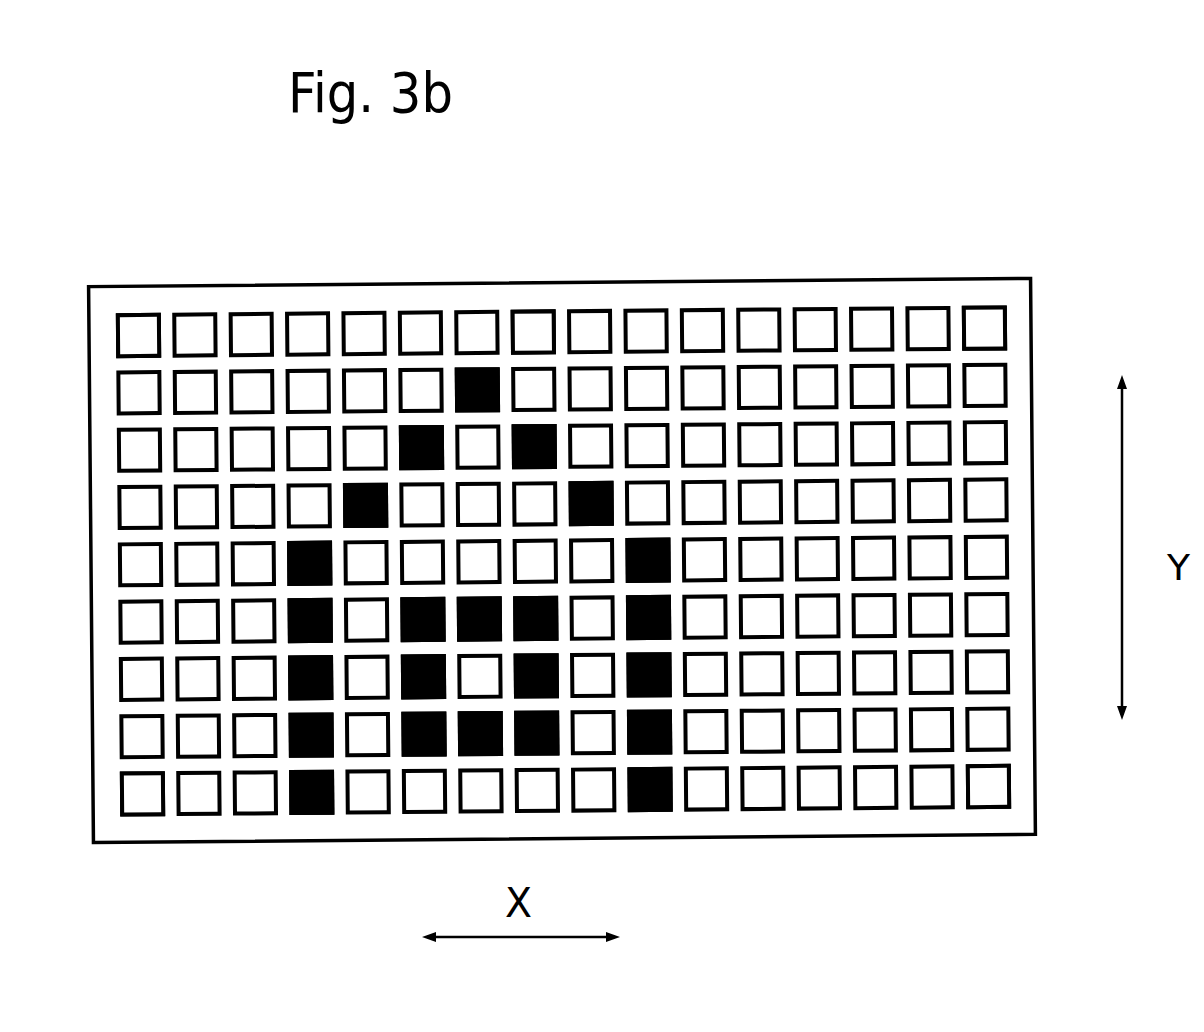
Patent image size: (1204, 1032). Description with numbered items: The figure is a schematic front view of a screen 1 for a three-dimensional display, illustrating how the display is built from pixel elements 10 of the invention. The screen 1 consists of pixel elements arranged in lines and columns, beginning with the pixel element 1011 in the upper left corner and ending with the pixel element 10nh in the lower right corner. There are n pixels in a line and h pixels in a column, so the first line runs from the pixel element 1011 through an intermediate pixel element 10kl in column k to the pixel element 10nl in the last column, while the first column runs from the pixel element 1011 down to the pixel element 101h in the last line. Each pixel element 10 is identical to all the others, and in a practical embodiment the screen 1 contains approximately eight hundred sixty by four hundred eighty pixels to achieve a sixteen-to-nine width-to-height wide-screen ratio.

The screen 1 is at (1030, 786).
The pixel element 10 is at (527, 330).
The pixel element 1011 is at (133, 327).
The pixel element 10kl is at (527, 330).
The pixel element 10nl is at (985, 318).
The pixel element 101h is at (138, 800).
The pixel element 10nh is at (989, 787).